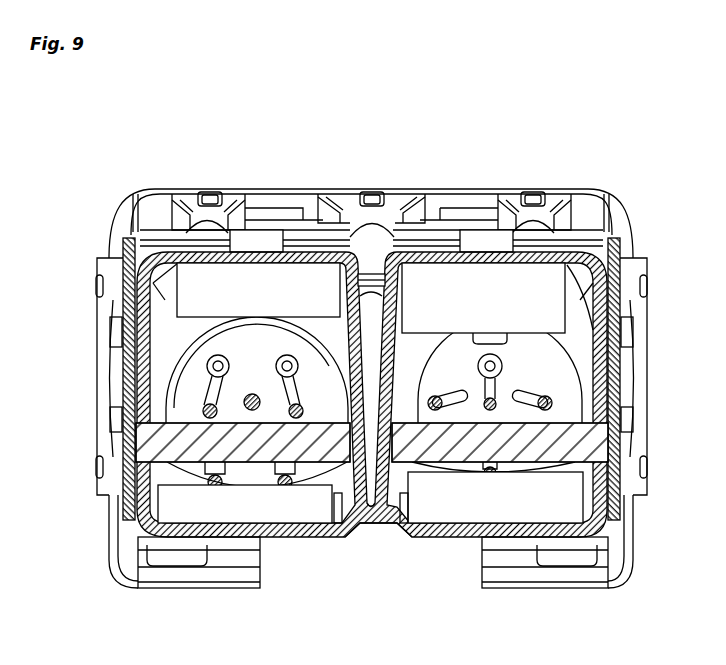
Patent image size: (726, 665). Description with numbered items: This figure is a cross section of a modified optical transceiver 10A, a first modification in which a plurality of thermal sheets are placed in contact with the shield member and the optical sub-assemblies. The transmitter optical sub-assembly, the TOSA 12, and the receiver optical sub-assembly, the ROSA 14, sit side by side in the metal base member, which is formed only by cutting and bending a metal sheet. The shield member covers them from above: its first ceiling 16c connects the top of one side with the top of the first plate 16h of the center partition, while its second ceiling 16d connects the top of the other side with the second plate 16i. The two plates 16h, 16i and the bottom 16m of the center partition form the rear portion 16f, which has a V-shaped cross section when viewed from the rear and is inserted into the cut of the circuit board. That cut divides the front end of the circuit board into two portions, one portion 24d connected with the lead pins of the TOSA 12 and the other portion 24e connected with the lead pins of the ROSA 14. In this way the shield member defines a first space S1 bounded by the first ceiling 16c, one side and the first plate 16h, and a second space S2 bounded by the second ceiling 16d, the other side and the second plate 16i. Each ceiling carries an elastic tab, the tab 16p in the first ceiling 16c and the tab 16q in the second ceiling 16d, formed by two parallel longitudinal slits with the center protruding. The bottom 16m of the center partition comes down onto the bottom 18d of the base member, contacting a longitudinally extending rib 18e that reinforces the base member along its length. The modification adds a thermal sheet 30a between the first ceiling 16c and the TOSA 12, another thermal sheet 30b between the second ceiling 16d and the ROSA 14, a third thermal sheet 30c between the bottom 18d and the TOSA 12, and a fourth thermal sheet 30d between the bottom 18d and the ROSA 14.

The optical transceiver 10A is at (608, 60).
The transmitter optical sub-assembly (TOSA) 12 is at (576, 372).
The receiver optical sub-assembly (ROSA) 14 is at (163, 371).
The first ceiling 16c is at (550, 254).
The second ceiling 16d is at (190, 257).
The rear portion of the center partition 16f is at (437, 122).
The first plate 16h is at (386, 285).
The second plate 16i is at (366, 274).
The bottom of the center partition 16m is at (392, 508).
The elastic tab 16p is at (483, 244).
The elastic tab 16q is at (258, 244).
The bottom of the base member 18d is at (298, 537).
The rib 18e is at (363, 533).
The front end portion of the circuit board 24d is at (598, 440).
The front end portion of the circuit board 24e is at (150, 447).
The thermal sheet 30a is at (531, 285).
The thermal sheet 30b is at (298, 285).
The third thermal sheet 30c is at (458, 507).
The fourth thermal sheet 30d is at (223, 507).
The first space S1 is at (576, 317).
The second space S2 is at (171, 321).